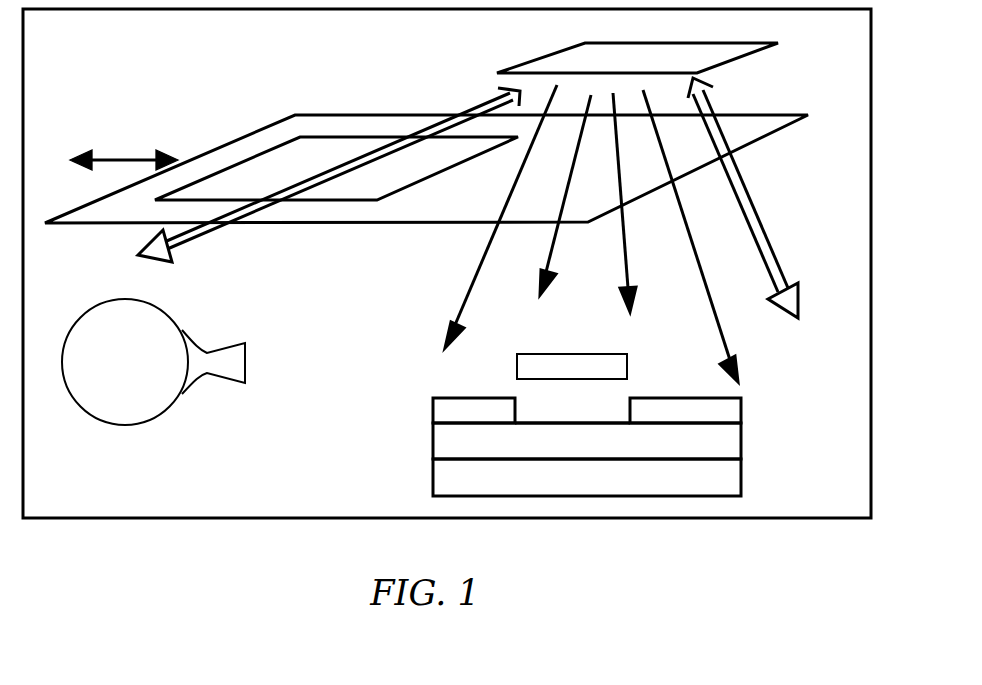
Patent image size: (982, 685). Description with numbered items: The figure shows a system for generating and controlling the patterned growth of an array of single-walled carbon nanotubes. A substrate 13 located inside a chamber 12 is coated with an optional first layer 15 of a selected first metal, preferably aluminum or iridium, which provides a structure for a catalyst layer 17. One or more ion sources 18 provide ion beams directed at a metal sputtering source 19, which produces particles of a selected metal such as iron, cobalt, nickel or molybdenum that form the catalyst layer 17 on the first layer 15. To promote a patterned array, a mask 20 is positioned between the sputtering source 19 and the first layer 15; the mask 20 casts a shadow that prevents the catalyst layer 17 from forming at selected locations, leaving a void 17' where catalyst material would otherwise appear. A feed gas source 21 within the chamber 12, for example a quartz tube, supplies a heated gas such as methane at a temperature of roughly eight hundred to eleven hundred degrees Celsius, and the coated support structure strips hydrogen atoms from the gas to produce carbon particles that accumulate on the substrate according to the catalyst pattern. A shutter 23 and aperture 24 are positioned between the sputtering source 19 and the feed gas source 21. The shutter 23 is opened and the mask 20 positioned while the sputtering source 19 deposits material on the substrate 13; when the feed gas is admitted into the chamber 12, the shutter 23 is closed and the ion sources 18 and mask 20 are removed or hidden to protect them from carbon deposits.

The chamber 12 is at (852, 392).
The substrate 13 is at (732, 487).
The first layer 15 is at (720, 452).
The catalyst layer 17 is at (597, 384).
The void 17' is at (613, 374).
The ion sources 18 is at (160, 252).
The metal sputtering source 19 is at (720, 57).
The mask 20 is at (538, 370).
The feed gas source 21 is at (120, 427).
The shutter 23 is at (123, 157).
The aperture 24 is at (325, 152).